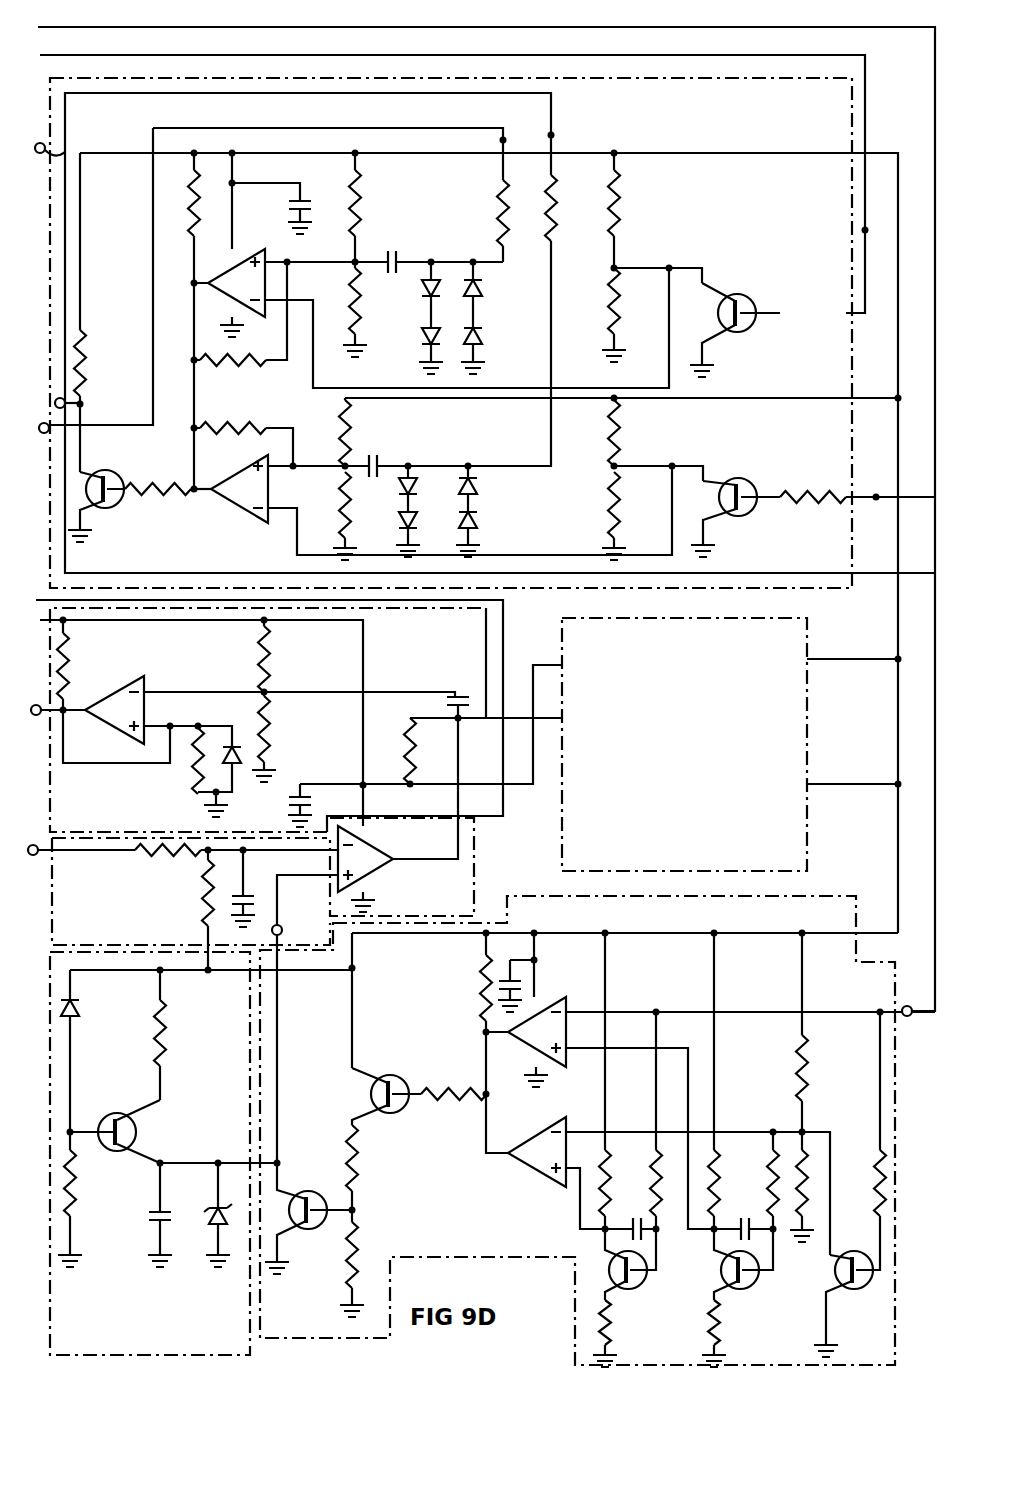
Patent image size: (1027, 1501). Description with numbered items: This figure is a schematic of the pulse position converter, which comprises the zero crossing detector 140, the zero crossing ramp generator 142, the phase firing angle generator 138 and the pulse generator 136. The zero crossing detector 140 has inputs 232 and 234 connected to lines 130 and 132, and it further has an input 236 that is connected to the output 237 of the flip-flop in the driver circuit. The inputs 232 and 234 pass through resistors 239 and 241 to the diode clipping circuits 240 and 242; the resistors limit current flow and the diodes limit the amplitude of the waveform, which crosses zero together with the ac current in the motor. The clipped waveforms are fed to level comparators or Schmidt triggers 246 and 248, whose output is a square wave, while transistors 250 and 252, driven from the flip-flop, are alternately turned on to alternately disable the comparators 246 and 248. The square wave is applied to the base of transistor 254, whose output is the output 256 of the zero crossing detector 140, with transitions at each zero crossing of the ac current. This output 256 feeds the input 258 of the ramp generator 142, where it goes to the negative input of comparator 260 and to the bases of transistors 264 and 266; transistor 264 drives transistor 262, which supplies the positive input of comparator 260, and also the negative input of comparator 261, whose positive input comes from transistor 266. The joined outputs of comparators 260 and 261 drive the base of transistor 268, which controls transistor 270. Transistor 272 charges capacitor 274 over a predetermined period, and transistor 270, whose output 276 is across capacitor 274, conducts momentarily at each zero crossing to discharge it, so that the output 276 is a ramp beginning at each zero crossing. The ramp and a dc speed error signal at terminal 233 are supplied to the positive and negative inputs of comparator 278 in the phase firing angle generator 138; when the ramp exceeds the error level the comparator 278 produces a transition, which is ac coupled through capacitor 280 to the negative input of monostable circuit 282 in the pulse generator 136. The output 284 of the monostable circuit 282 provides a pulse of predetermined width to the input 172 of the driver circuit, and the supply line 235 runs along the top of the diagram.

The line 130 is at (63, 156).
The line 132 is at (66, 410).
The pulse generator 136 is at (50, 780).
The phase firing angle generator 138 is at (52, 916).
The zero crossing detector 140 is at (612, 78).
The zero crossing ramp generator 142 is at (895, 1093).
The input of the driver circuit 172 is at (40, 705).
The input 232 is at (551, 135).
The input terminal 233 is at (37, 856).
The input 234 is at (503, 138).
The supply line 235 is at (934, 62).
The input 236 is at (865, 230).
The output of the flip-flop 237 is at (868, 124).
The resistor 239 is at (622, 230).
The diode clipping circuit 240 is at (462, 250).
The resistor 241 is at (498, 212).
The diode clipping circuit 242 is at (470, 460).
The level comparator 246 is at (258, 249).
The level comparator 248 is at (266, 458).
The transistor 250 is at (740, 294).
The transistor 252 is at (742, 478).
The transistor 254 is at (132, 468).
The output of the zero crossing detector 256 is at (80, 400).
The input of the zero crossing ramp generator 258 is at (902, 1010).
The comparator 260 is at (548, 1000).
The comparator 261 is at (546, 1128).
The transistor 262 is at (745, 1286).
The transistor 264 is at (862, 1252).
The transistor 266 is at (636, 1286).
The transistor 268 is at (412, 1064).
The transistor 270 is at (312, 1193).
The transistor 272 is at (118, 1116).
The capacitor 274 is at (160, 1214).
The output of transistor 270 276 is at (283, 927).
The comparator 278 is at (380, 852).
The capacitor 280 is at (456, 697).
The monostable circuit 282 is at (126, 680).
The output of the monostable circuit 284 is at (66, 706).